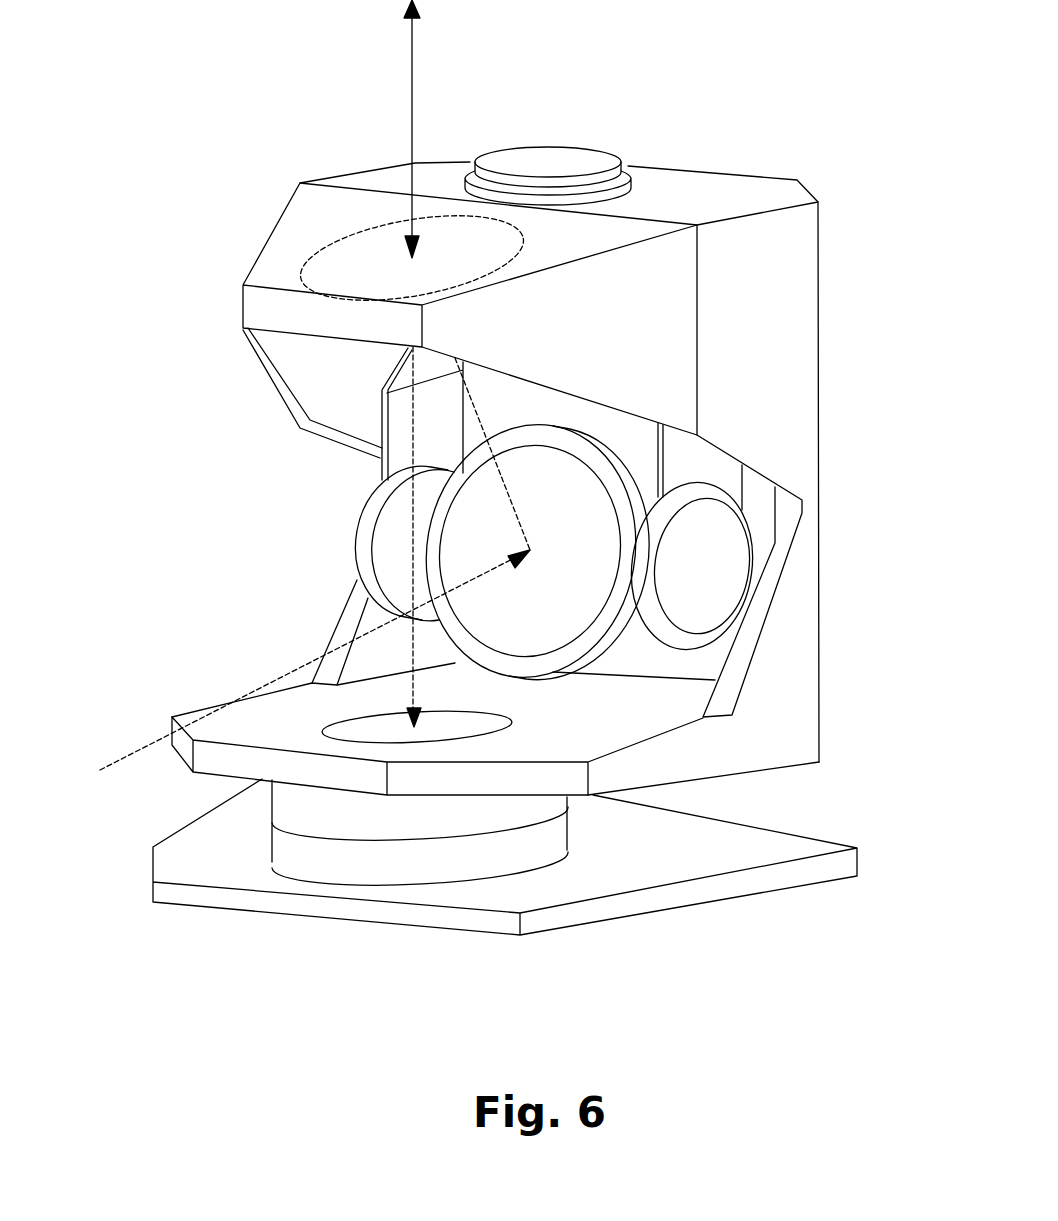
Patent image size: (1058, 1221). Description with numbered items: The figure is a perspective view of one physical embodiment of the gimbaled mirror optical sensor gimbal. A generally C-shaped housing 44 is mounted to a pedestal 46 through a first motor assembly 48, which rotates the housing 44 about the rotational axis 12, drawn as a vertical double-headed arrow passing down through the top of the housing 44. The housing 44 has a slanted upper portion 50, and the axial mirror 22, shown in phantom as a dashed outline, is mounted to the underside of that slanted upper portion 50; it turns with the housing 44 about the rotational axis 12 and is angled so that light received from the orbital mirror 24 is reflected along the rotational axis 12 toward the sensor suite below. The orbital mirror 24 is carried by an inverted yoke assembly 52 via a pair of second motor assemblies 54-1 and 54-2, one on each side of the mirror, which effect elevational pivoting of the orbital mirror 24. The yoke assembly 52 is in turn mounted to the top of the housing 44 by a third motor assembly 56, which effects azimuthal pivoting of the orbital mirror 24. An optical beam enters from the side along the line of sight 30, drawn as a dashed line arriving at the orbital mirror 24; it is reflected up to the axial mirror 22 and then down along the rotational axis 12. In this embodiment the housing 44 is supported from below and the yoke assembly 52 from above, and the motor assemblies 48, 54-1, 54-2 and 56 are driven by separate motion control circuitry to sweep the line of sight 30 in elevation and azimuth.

The rotational axis 12 is at (412, 87).
The third motor assembly 56 is at (587, 153).
The axial mirror 22 is at (330, 248).
The slanted upper portion 50 is at (263, 277).
The housing 44 is at (788, 327).
The yoke assembly 52 is at (400, 445).
The second motor assembly 54-1 is at (357, 533).
The orbital mirror 24 is at (565, 630).
The second motor assembly 54-2 is at (742, 545).
The line of sight 30 is at (155, 742).
The first motor assembly 48 is at (322, 827).
The pedestal 46 is at (722, 893).